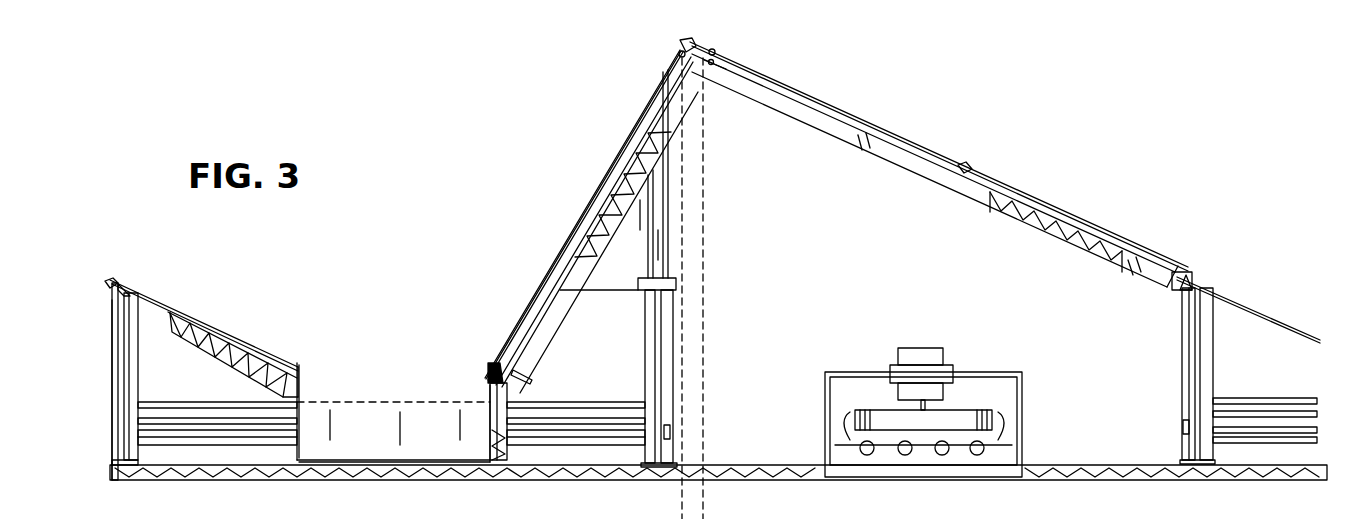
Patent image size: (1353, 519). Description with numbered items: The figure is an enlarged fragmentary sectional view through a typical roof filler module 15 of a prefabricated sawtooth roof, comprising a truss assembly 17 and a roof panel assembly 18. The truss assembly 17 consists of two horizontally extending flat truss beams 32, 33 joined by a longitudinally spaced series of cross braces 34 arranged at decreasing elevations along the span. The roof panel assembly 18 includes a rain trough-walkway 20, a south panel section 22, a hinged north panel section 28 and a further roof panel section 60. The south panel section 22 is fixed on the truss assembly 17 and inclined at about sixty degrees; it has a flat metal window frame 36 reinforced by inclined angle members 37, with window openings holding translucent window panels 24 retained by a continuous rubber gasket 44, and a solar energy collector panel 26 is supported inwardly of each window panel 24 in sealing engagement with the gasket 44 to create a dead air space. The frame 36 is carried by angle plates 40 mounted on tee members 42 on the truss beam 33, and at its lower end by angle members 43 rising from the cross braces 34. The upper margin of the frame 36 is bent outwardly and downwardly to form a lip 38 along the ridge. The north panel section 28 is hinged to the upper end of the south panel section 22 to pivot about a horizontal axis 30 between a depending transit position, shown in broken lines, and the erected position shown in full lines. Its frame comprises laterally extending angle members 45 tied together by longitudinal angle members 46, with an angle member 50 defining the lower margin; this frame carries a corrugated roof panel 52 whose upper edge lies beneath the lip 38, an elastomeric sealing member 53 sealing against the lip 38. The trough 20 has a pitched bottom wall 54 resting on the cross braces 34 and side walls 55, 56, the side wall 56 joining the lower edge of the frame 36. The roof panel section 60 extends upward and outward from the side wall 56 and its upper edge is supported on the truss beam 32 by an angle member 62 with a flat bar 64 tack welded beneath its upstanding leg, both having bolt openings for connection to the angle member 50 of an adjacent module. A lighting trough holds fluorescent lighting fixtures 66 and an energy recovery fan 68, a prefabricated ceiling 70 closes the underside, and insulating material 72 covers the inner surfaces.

The filler module 15 is at (972, 140).
The truss assembly 17 is at (105, 362).
The roof panel assembly 18 is at (506, 232).
The rain trough-walkway 20 is at (397, 395).
The south panel section 22 is at (522, 298).
The translucent window panel 24 is at (612, 167).
The solar energy collector panel 26 is at (600, 217).
The north panel section 28 is at (886, 120).
The horizontal axis 30 is at (694, 40).
The truss beam 32 is at (112, 416).
The truss beam 33 is at (676, 408).
The cross braces 34 is at (215, 410).
The window frame 36 is at (678, 44).
The angle members 37 is at (548, 334).
The lip 38 is at (715, 48).
The angle plates 40 is at (652, 210).
The tee members 42 is at (678, 284).
The angle members 43 is at (510, 425).
The gasket 44 is at (490, 374).
The angle members 45 is at (870, 150).
The angle members 46 is at (712, 66).
The angle member 50 is at (1160, 272).
The roof panel 52 is at (1035, 202).
The elastomeric sealing member 53 is at (736, 56).
The bottom wall 54 is at (412, 448).
The side wall 55 is at (300, 440).
The side wall 56 is at (488, 440).
The roof panel section 60 is at (228, 340).
The angle member 62 is at (115, 291).
The flat bar 64 is at (106, 282).
The fluorescent lighting fixtures 66 is at (874, 452).
The energy recovery fan 68 is at (948, 352).
The prefabricated ceiling 70 is at (1120, 470).
The insulating material 72 is at (230, 350).